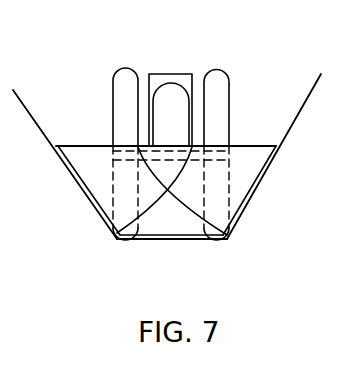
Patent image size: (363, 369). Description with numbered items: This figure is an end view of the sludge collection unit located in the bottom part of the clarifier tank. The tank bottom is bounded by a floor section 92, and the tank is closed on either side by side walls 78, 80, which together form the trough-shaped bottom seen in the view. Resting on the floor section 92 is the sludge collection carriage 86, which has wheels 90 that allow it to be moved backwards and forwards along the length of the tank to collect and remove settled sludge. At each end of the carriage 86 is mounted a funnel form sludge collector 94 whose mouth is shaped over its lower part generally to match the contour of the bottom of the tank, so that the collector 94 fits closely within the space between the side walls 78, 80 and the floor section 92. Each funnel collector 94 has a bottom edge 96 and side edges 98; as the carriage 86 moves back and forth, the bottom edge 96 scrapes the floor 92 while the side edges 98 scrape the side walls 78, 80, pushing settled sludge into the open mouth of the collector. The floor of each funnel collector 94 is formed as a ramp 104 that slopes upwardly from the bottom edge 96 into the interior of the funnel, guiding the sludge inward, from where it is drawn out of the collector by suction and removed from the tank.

The side wall 78 is at (46, 137).
The side wall 80 is at (286, 133).
The sludge collection carriage 86 is at (164, 64).
The wheels 90 is at (216, 107).
The floor section 92 is at (157, 233).
The funnel form sludge collector 94 is at (243, 165).
The bottom edge 96 is at (173, 233).
The side edges 98 is at (82, 184).
The ramp 104 is at (171, 218).